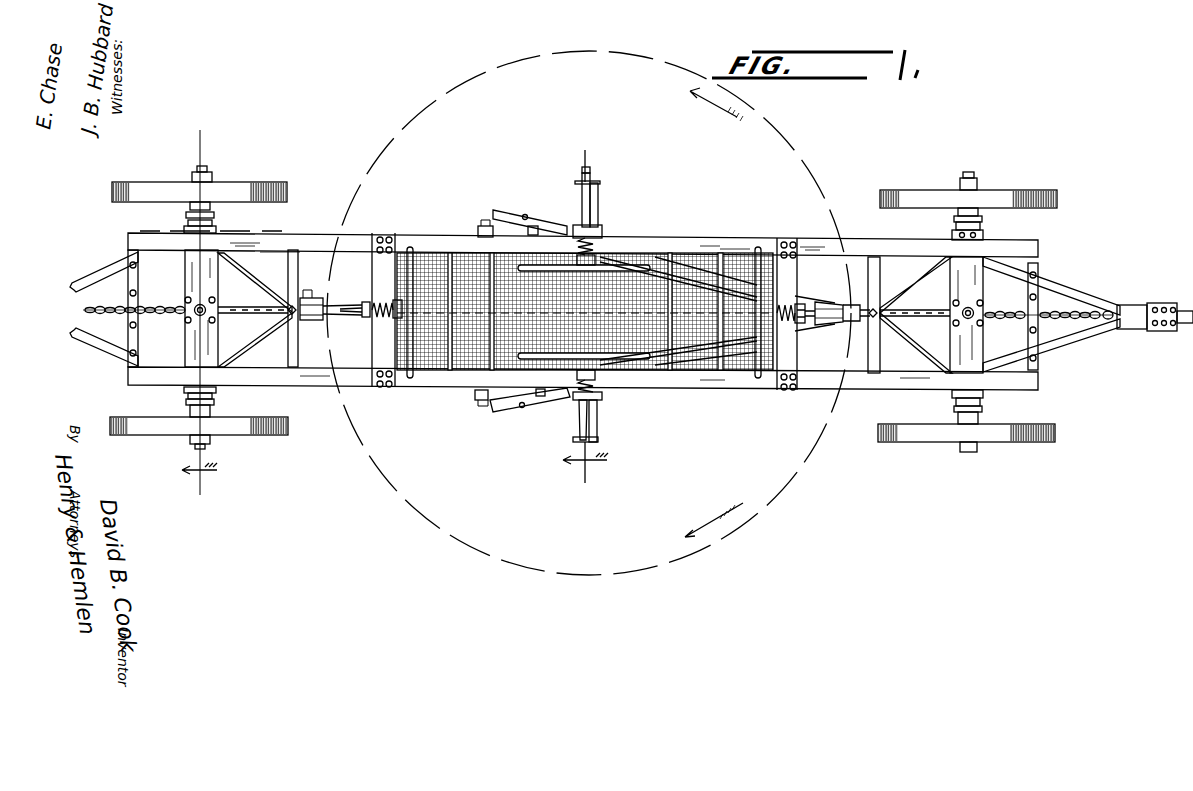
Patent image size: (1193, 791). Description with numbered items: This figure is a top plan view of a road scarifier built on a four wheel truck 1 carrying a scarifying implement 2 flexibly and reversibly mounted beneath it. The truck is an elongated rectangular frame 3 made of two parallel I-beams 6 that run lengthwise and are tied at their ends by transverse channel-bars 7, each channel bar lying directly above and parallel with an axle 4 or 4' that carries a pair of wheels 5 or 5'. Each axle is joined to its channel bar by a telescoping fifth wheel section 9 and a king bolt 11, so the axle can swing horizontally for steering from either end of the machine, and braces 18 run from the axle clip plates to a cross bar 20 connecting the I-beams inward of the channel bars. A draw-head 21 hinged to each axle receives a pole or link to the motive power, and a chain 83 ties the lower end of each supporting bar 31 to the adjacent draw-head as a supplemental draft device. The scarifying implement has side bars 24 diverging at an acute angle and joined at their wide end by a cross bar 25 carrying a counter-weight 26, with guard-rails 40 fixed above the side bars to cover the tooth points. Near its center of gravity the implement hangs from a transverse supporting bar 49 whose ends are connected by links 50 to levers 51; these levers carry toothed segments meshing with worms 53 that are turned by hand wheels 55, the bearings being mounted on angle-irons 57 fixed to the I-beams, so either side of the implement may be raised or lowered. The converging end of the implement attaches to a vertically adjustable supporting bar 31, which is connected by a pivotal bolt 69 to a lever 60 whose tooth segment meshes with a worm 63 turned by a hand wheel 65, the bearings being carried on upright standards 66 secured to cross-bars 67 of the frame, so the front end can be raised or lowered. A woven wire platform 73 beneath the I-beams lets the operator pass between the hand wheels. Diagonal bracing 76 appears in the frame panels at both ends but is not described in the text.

The four wheel truck 1 is at (880, 242).
The scarifying implement 2 is at (508, 405).
The elongated rectangular frame 3 is at (1002, 329).
The axle 4 is at (982, 229).
The axle 4' is at (182, 402).
The wheels 5 is at (815, 317).
The wheels 5' is at (199, 312).
The I-beams 6 is at (700, 391).
The transverse channel-bar 7 is at (210, 340).
The fifth wheel section 9 is at (205, 224).
The king bolt 11 is at (194, 307).
The brace 18 is at (232, 307).
The cross bar 20 is at (298, 277).
The draw-head 21 is at (66, 296).
The side bars 24 is at (512, 212).
The cross bar 25 is at (482, 227).
The counter-weight 26 is at (477, 400).
The vertically adjustable supporting bar 31 is at (334, 320).
The guard-rails 40 is at (548, 225).
The supporting bar 49 is at (600, 192).
The links 50 is at (590, 182).
The levers 51 is at (598, 207).
The worms 53 is at (576, 246).
The hand wheels 55 is at (630, 265).
The angle-irons 57 is at (605, 240).
The levers 60 is at (362, 308).
The worms 63 is at (380, 305).
The hand wheels 65 is at (409, 247).
The upright standards 66 is at (396, 320).
The cross-bars 67 is at (394, 389).
The pivotal bolt 69 is at (318, 322).
The platform 73 is at (656, 290).
The diagonal brace 76 is at (264, 286).
The chains 83 is at (108, 313).